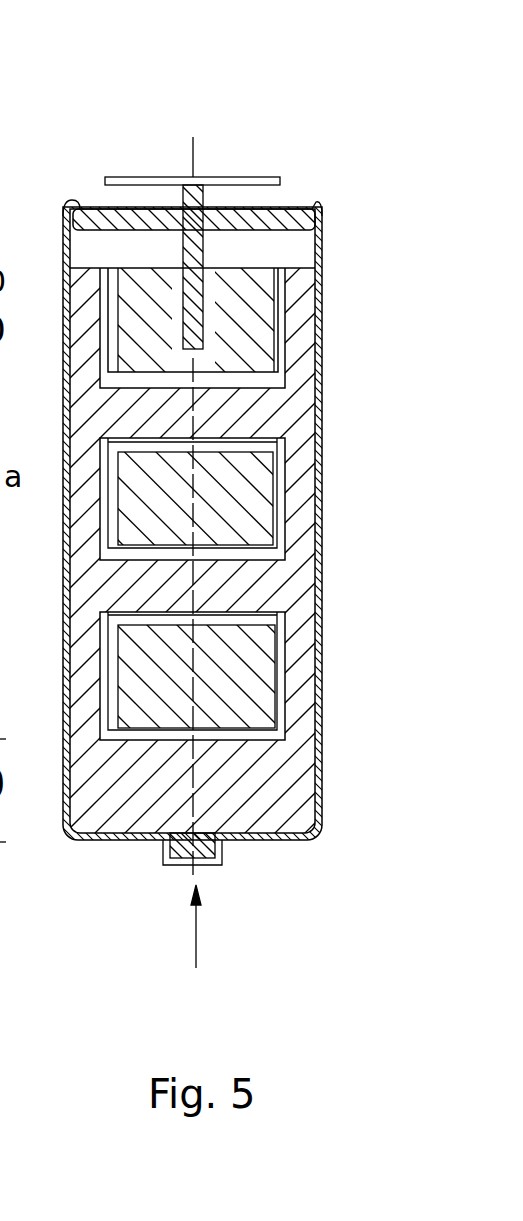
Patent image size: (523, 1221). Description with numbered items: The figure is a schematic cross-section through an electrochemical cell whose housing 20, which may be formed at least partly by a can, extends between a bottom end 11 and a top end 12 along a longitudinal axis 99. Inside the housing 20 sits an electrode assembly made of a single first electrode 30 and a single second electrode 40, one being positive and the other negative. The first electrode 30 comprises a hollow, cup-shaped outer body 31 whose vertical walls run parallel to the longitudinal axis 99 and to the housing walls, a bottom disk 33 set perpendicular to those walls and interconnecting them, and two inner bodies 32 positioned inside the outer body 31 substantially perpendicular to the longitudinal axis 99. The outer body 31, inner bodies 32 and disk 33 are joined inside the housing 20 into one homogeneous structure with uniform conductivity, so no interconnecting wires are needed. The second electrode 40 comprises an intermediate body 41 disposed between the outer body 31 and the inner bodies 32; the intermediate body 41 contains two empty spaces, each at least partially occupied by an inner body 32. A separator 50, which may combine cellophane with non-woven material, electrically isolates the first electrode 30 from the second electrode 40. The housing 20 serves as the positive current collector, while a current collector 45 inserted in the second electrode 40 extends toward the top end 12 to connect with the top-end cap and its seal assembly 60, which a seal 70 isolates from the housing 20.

The bottom end 11 is at (196, 930).
The top end 12 is at (193, 116).
The housing 20 is at (320, 292).
The first electrode 30 is at (261, 610).
The outer body 31 is at (304, 437).
The inner body 32 is at (248, 402).
The bottom disk 33 is at (270, 822).
The second electrode 40 is at (245, 493).
The intermediate body 41 is at (255, 653).
The current collector 45 is at (208, 258).
The separator 50 is at (283, 515).
The seal assembly 60 is at (100, 152).
The seal 70 is at (70, 206).
The longitudinal axis 99 is at (193, 156).